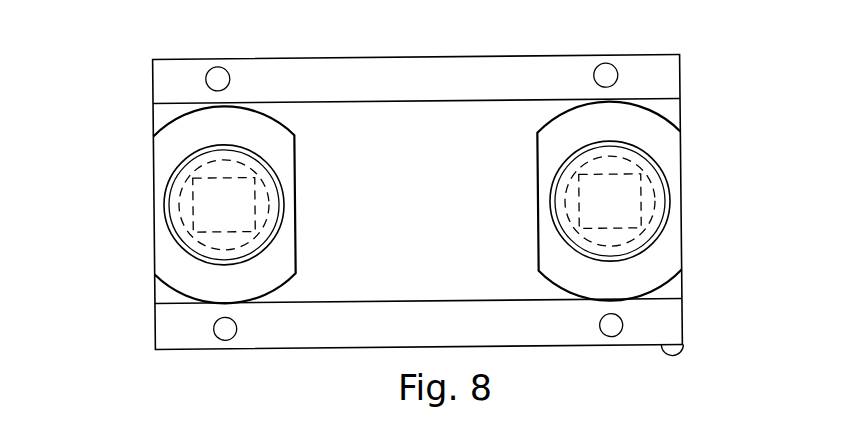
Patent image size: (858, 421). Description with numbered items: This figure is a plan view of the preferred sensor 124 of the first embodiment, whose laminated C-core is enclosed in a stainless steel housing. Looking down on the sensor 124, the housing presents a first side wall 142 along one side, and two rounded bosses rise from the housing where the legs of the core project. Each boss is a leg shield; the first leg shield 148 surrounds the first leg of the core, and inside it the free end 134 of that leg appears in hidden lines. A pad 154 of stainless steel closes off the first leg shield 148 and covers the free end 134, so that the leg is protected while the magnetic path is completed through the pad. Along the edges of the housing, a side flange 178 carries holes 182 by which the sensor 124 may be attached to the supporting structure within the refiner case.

The sensor 124 is at (692, 147).
The first side wall 142 is at (164, 141).
The first leg shield 148 is at (166, 186).
The free end 134 is at (194, 208).
The pad 154 is at (179, 228).
The hole 182 is at (622, 322).
The side flange 178 is at (683, 347).